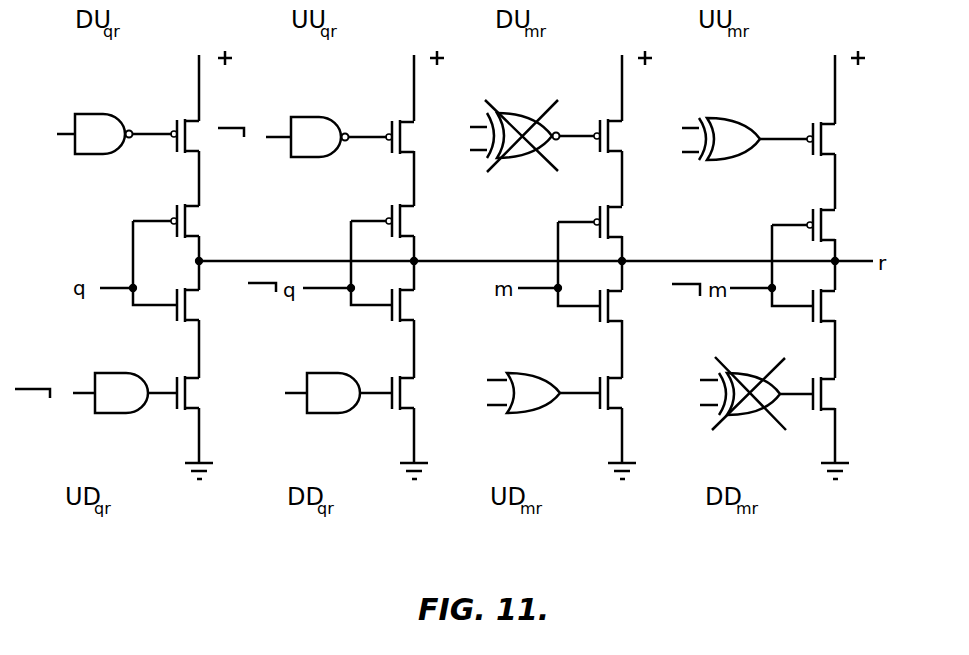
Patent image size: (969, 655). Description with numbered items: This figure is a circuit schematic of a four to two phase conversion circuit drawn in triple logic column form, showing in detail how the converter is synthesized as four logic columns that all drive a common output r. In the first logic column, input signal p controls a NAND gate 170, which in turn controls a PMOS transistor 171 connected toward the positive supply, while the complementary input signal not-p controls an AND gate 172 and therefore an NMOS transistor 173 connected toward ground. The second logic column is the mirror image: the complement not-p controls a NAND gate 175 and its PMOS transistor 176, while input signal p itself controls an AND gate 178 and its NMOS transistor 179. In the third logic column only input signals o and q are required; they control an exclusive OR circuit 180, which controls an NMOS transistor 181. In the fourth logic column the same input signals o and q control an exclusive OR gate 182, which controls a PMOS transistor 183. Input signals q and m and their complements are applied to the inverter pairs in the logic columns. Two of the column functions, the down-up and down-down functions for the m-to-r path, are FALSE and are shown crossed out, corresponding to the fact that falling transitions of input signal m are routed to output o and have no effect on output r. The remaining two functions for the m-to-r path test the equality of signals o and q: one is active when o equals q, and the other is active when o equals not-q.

The NAND gate 170 is at (90, 154).
The PMOS transistor 171 is at (200, 141).
The AND gate 172 is at (105, 413).
The NMOS transistor 173 is at (197, 399).
The NAND gate 175 is at (303, 157).
The PMOS transistor 176 is at (410, 141).
The AND gate 178 is at (318, 413).
The NMOS transistor 179 is at (412, 399).
The exclusive OR circuit 180 is at (533, 378).
The NMOS transistor 181 is at (617, 397).
The exclusive OR gate 182 is at (735, 159).
The PMOS transistor 183 is at (830, 145).